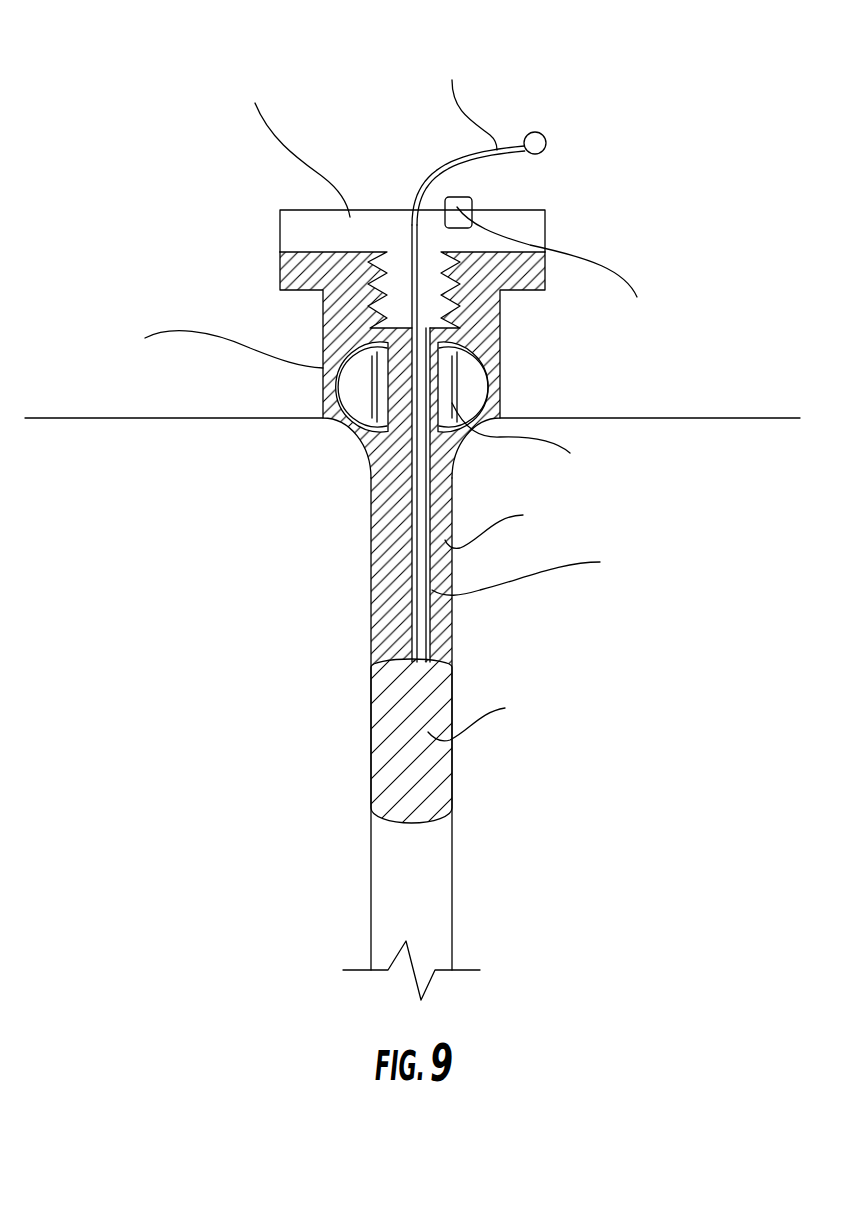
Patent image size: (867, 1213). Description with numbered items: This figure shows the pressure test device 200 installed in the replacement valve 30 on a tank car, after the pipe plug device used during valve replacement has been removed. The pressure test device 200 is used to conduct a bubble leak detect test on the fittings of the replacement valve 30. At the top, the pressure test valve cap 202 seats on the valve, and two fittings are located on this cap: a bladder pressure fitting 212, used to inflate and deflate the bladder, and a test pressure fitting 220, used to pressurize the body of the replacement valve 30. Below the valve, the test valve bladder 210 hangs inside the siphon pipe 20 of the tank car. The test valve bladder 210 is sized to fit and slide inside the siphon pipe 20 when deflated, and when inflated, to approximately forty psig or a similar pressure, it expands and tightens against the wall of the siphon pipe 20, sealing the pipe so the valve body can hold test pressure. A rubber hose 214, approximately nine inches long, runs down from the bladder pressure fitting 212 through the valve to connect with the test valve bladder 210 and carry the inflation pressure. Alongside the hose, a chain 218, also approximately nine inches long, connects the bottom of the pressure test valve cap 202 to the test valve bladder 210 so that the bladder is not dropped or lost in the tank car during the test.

The pressure test device 200 is at (412, 502).
The pressure test valve cap 202 is at (307, 228).
The bladder pressure fitting 212 is at (547, 142).
The test pressure fitting 220 is at (432, 196).
The replacement valve 30 is at (333, 302).
The rubber hose 214 is at (410, 487).
The siphon pipe 20 is at (378, 575).
The chain 218 is at (432, 640).
The test valve bladder 210 is at (428, 775).